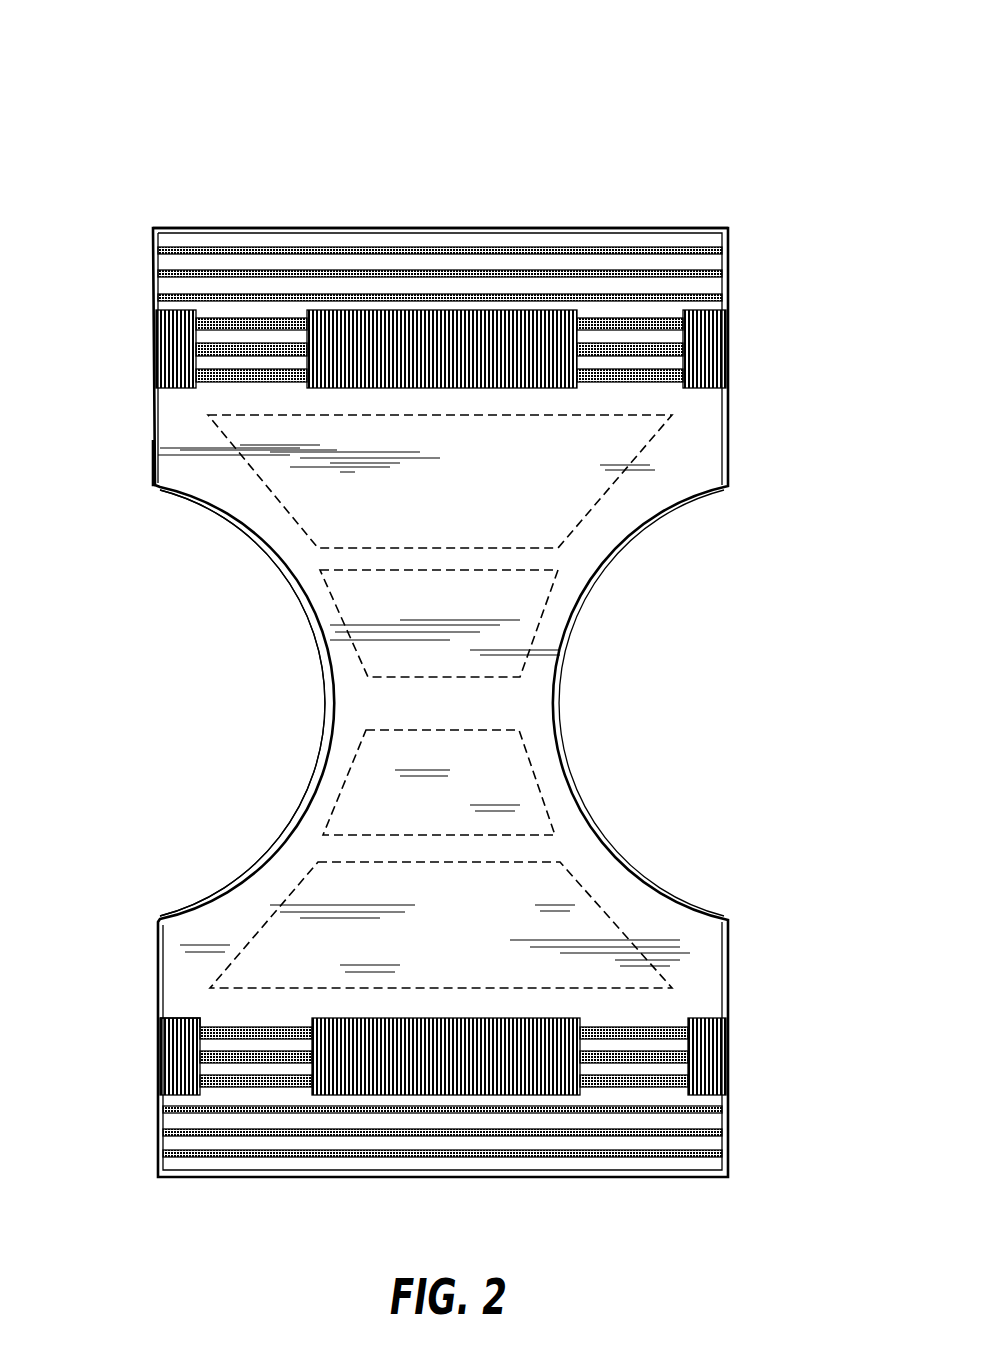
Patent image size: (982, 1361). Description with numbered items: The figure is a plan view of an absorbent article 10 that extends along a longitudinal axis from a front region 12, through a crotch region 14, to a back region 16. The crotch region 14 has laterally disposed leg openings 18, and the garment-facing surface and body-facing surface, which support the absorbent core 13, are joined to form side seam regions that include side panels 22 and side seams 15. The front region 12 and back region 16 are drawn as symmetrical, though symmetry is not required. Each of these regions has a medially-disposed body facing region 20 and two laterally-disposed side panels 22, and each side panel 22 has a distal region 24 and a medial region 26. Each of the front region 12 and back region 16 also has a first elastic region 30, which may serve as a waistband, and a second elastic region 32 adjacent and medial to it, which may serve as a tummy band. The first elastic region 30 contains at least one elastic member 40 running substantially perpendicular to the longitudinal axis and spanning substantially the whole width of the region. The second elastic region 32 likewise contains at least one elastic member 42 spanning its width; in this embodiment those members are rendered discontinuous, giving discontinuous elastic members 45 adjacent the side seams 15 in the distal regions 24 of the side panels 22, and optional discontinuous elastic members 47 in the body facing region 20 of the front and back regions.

The absorbent article 10 is at (781, 100).
The front region 12 is at (446, 294).
The absorbent core 13 is at (330, 522).
The crotch region 14 is at (445, 701).
The side seams 15 is at (153, 452).
The back region 16 is at (455, 1080).
The leg openings 18 is at (208, 670).
The body facing region 20 is at (577, 185).
The side panels 22 is at (651, 186).
The distal region 24 is at (195, 227).
The medial region 26 is at (305, 227).
The first elastic region 30 is at (140, 243).
The second elastic region 32 is at (140, 312).
The elastic member 40 is at (230, 1153).
The second elastic region elastic member 42 is at (410, 1125).
The discontinuous elastic members 45 is at (158, 1030).
The discontinuous elastic members 47 is at (512, 1096).